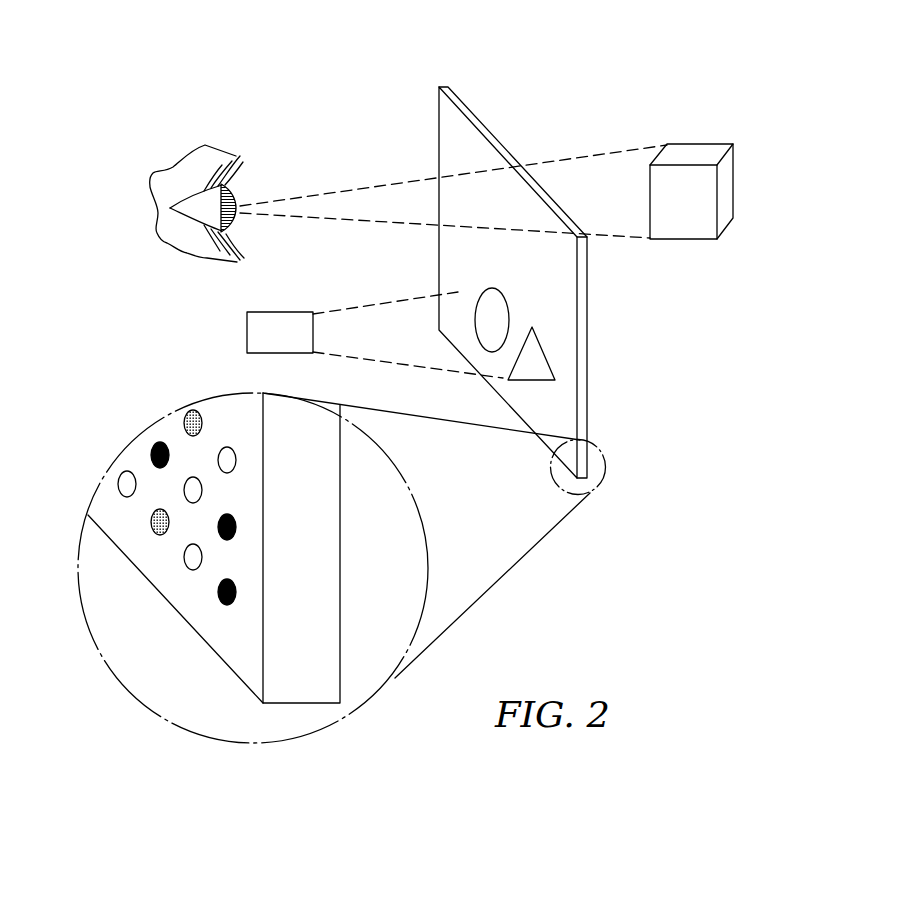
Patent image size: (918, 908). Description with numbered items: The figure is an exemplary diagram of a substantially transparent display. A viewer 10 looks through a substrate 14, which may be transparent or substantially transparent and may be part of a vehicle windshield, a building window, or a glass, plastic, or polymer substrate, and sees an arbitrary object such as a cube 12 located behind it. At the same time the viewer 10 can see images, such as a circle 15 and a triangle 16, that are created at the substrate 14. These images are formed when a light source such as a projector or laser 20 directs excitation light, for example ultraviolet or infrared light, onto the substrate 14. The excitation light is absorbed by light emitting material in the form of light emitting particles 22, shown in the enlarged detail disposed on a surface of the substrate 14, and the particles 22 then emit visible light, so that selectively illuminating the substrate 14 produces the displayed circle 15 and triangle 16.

The viewer 10 is at (234, 188).
The cube 12 is at (697, 150).
The substrate 14 is at (483, 128).
The circle 15 is at (482, 317).
The triangle 16 is at (515, 360).
The projector or laser 20 is at (280, 311).
The light emitting particles 22 is at (183, 423).